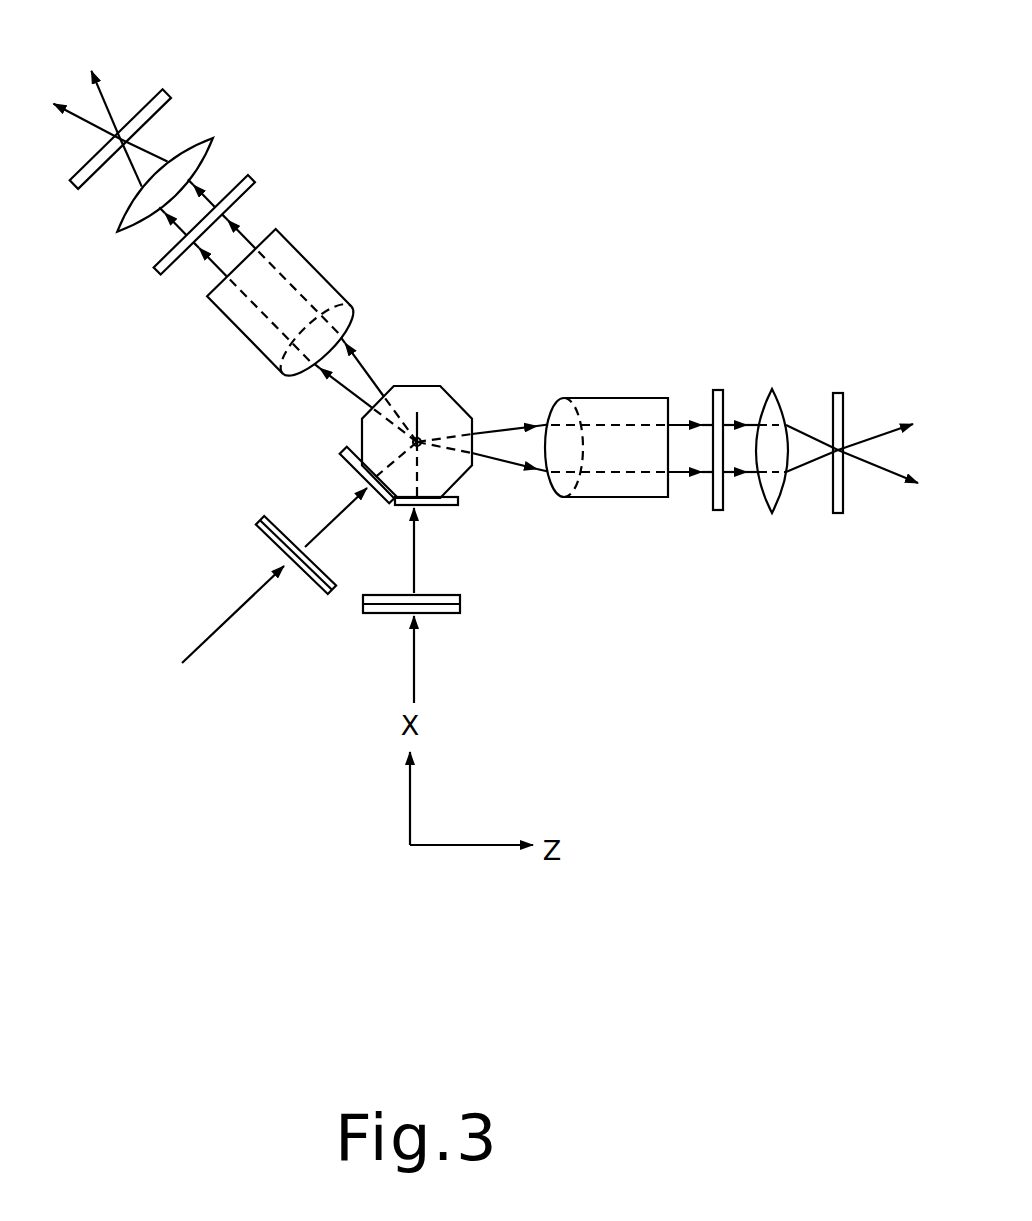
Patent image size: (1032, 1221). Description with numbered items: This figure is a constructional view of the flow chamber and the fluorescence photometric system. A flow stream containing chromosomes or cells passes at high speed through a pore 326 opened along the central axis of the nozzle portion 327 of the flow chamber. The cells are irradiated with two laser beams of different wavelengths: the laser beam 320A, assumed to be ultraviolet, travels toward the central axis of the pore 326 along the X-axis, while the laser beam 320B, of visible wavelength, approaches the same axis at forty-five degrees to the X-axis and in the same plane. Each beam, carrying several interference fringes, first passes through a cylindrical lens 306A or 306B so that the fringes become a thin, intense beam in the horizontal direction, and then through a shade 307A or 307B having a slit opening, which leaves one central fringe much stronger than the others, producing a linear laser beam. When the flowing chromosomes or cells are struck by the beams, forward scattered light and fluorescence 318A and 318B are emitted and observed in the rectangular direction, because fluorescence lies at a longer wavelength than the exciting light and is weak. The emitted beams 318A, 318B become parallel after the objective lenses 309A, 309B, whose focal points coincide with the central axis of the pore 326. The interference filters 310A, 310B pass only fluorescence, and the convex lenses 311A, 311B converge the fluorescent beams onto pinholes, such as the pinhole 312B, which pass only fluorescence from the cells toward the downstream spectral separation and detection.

The cylindrical lens 306A is at (460, 608).
The cylindrical lens 306B is at (267, 517).
The shade having an opening 307A is at (443, 503).
The shade having an opening 307B is at (350, 468).
The objective lens 309A is at (637, 407).
The objective lens 309B is at (310, 262).
The interference filter 310A is at (720, 388).
The interference filter 310B is at (253, 177).
The convex lens 311A is at (778, 395).
The convex lens 311B is at (209, 132).
The pinhole 312B is at (842, 392).
The fluorescence 318A is at (512, 438).
The fluorescence 318B is at (355, 375).
The laser beam 320A is at (414, 673).
The laser beam 320B is at (222, 622).
The pore 326 is at (421, 436).
The nozzle portion 327 is at (437, 397).